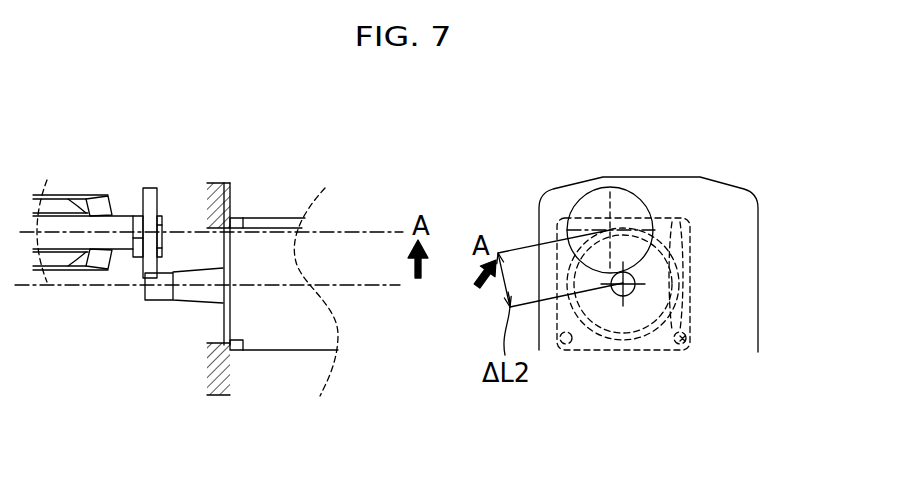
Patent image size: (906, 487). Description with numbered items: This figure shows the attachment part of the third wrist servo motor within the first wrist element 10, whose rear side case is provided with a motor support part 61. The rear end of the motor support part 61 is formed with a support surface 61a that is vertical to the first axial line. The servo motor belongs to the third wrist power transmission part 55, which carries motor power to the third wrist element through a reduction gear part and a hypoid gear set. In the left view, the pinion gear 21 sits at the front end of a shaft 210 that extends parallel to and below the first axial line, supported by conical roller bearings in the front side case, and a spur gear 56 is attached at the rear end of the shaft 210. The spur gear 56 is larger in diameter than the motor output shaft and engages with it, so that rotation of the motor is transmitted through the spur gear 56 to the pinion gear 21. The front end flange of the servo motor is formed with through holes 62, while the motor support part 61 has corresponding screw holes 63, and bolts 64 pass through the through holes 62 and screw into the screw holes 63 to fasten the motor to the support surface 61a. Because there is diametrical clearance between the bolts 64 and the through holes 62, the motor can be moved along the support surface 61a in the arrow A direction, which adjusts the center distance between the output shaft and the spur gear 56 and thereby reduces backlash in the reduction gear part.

The first wrist element 10 is at (760, 222).
The pinion gear 21 is at (83, 204).
The shaft 210 is at (63, 213).
The third wrist power transmission part 55 is at (148, 187).
The spur gear 56 is at (630, 188).
The motor support part 61 is at (218, 183).
The support surface 61a is at (234, 350).
The through holes 62 is at (724, 236).
The screw holes 63 is at (683, 219).
The bolts 64 is at (688, 352).